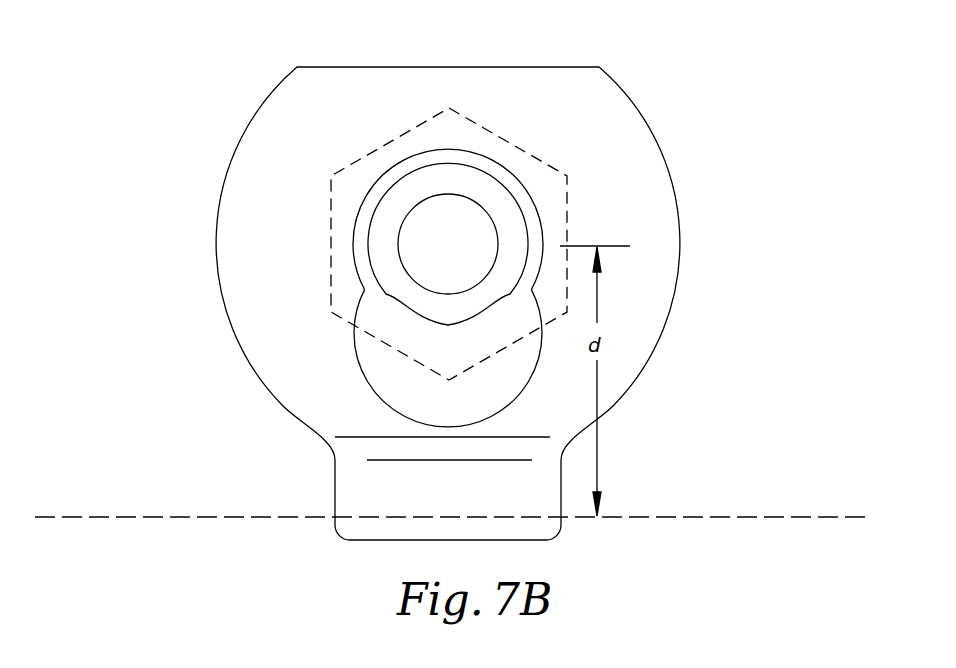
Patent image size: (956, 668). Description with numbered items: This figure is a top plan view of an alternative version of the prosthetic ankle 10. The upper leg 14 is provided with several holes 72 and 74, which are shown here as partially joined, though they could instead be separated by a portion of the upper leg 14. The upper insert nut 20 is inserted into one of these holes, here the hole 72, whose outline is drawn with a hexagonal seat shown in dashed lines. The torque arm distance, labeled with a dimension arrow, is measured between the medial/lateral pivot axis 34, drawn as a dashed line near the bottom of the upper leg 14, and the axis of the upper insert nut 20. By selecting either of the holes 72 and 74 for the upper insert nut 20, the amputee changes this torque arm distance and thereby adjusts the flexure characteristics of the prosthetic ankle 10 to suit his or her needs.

The prosthetic ankle 10 is at (212, 85).
The upper leg 14 is at (680, 224).
The upper insert nut 20 is at (568, 214).
The hole 72 is at (480, 162).
The hole 74 is at (383, 392).
The medial/lateral pivot axis 34 is at (318, 518).